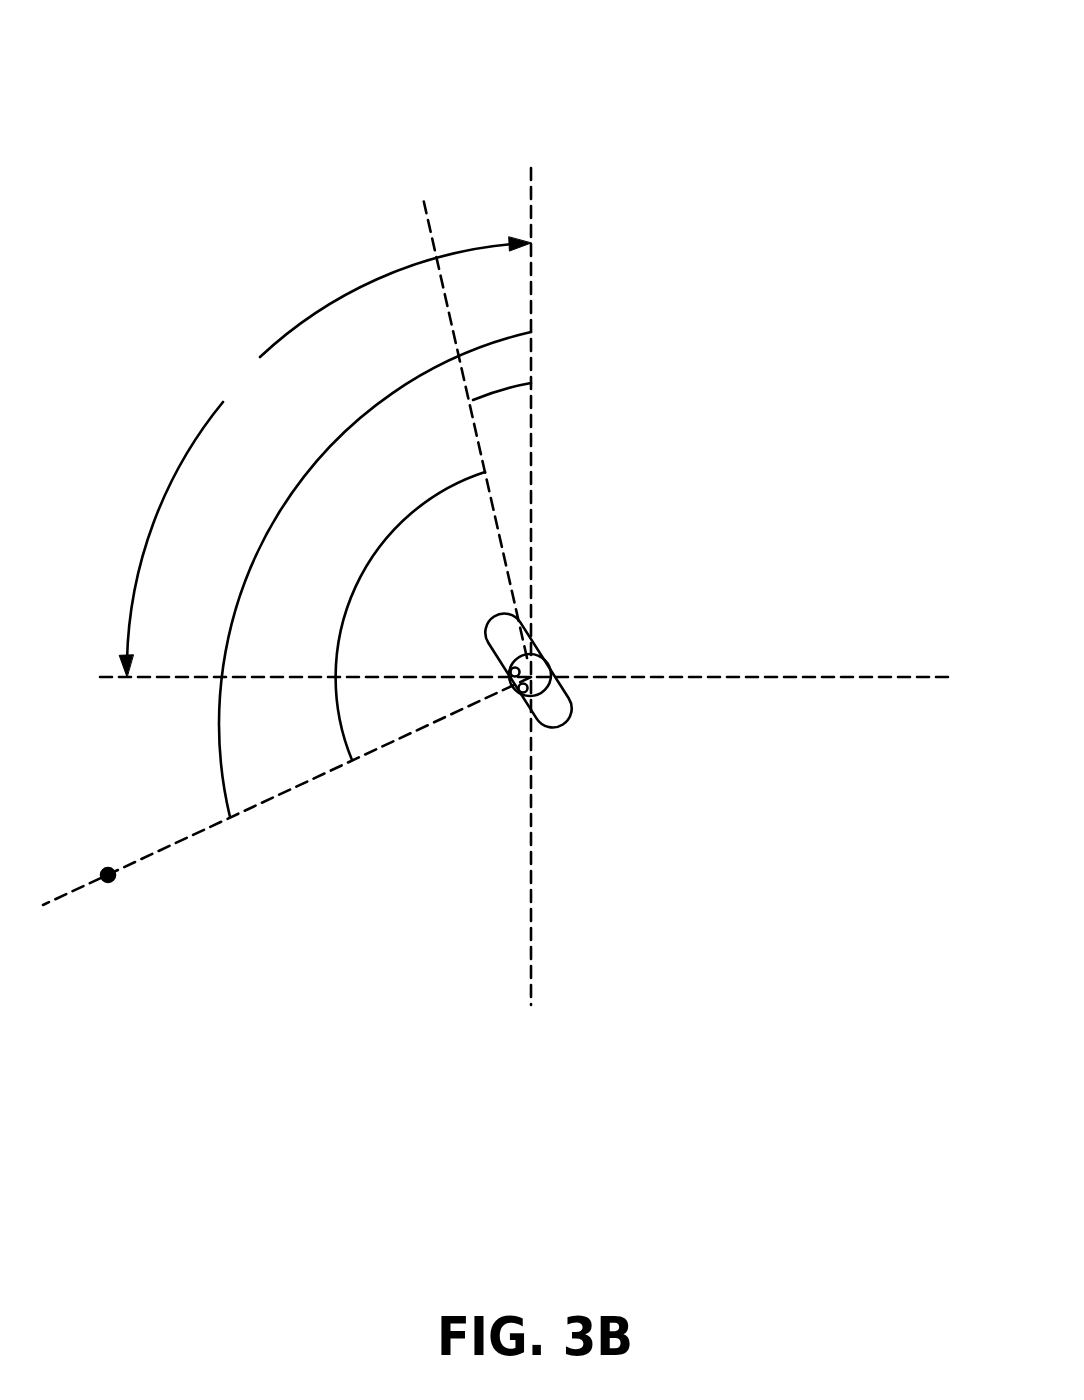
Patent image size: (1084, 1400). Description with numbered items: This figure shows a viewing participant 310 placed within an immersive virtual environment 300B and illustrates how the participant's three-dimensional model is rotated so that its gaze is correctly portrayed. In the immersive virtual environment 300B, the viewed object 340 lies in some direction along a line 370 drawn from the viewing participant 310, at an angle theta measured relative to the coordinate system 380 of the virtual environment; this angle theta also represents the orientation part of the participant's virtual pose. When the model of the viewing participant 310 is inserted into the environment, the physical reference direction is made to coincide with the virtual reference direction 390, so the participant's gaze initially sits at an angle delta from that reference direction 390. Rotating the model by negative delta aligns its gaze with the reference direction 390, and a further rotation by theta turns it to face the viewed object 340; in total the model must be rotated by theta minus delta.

The immersive virtual environment 300B is at (572, 34).
The viewing participant 310 is at (555, 661).
The viewed object 340 is at (116, 893).
The line 370 is at (43, 905).
The coordinate system 380 is at (325, 457).
The virtual reference direction 390 is at (531, 172).